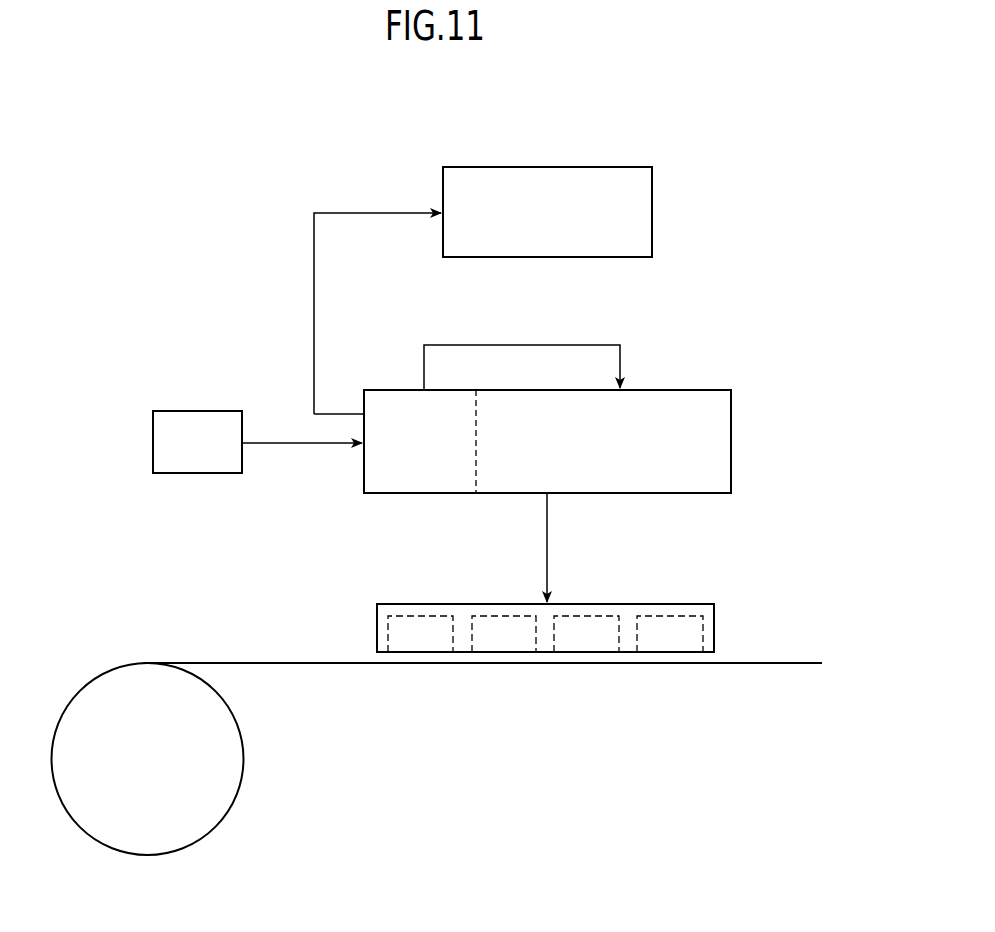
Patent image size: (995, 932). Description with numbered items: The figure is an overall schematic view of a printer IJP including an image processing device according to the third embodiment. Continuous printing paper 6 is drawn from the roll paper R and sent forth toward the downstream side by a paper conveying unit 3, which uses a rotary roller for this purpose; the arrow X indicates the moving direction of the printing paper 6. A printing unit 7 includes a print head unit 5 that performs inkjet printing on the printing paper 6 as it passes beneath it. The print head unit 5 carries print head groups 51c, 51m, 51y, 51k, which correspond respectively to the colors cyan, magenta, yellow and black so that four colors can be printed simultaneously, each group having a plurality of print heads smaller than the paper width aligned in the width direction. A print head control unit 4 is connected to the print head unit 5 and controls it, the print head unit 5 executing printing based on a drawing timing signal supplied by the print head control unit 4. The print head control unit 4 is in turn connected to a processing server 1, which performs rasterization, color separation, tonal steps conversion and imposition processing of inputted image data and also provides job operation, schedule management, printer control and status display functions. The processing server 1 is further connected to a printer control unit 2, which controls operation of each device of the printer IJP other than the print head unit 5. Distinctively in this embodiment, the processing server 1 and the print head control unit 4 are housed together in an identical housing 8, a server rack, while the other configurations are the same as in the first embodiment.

The printer IJP is at (733, 221).
The processing server 1 is at (389, 390).
The printer control unit 2 is at (652, 215).
The paper conveying unit 3 is at (200, 411).
The print head control unit 4 is at (731, 443).
The print head unit 5 is at (714, 628).
The print head group 51c is at (421, 616).
The print head group 51m is at (497, 616).
The print head group 51y is at (595, 616).
The print head group 51k is at (678, 616).
The printing paper 6 is at (240, 662).
The printing unit 7 is at (379, 591).
The housing 8 is at (692, 337).
The roll paper R is at (257, 759).
The arrow X is at (526, 680).